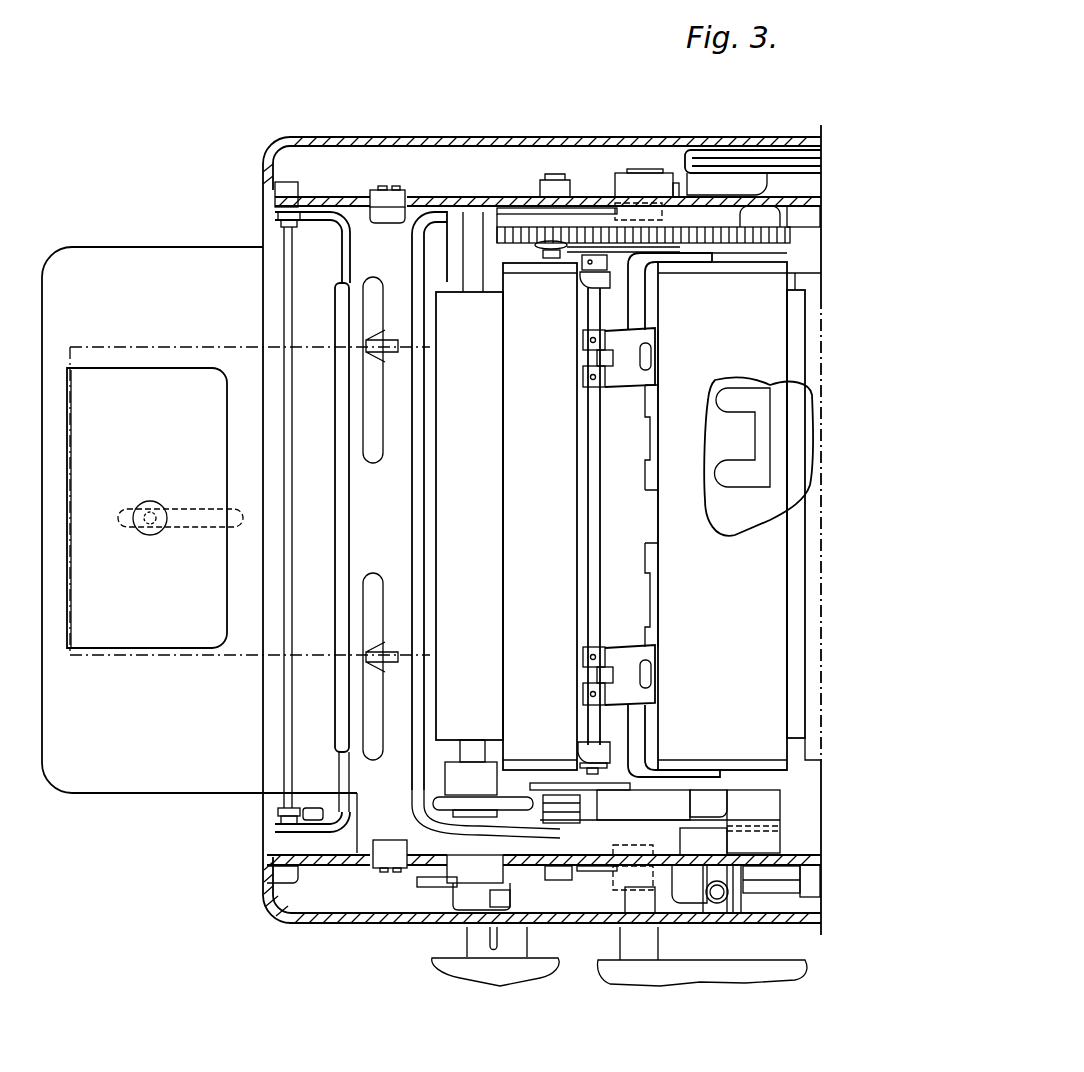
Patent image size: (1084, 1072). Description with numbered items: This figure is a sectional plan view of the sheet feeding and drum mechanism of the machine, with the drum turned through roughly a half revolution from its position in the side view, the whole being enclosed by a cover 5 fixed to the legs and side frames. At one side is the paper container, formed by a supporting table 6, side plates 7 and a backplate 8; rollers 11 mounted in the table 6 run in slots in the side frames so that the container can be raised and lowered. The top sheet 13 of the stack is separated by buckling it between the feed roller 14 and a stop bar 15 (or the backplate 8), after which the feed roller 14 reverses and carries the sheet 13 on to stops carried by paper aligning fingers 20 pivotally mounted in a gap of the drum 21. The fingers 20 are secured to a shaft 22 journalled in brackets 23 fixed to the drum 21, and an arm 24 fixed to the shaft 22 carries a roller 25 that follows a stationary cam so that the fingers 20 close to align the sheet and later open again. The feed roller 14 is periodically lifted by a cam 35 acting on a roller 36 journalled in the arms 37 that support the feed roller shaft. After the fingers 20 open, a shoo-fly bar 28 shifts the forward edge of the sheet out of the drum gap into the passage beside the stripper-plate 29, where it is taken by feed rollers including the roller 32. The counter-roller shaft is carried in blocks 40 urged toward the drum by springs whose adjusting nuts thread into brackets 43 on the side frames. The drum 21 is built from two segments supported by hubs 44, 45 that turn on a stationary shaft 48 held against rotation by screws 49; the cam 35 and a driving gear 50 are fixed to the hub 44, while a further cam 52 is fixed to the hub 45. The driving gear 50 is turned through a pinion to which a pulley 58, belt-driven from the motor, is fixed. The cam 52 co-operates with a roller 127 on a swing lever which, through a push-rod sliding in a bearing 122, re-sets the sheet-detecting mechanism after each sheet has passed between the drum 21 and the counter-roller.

The cover 5 is at (400, 924).
The supporting table 6 is at (70, 622).
The side plates 7 is at (388, 657).
The backplate 8 is at (146, 768).
The rollers 11 is at (377, 861).
The top sheet 13 is at (128, 347).
The feed roller 14 is at (469, 503).
The stop bar 15 is at (345, 466).
The paper aligning fingers 20 is at (638, 658).
The drum 21 is at (722, 516).
The shaft 22 is at (593, 443).
The brackets 23 is at (593, 752).
The arm 24 is at (573, 249).
The roller 25 is at (537, 247).
The shoo-fly bar 28 is at (633, 750).
The stripper-plate 29 is at (765, 405).
The feed roller 32 is at (800, 558).
The cam 35 is at (588, 225).
The roller 36 is at (622, 225).
The arms 37 is at (445, 213).
The blocks 40 is at (687, 898).
The brackets 43 is at (733, 905).
The hub 44 is at (737, 268).
The hub 45 is at (732, 760).
The stationary shaft 48 is at (650, 173).
The screws 49 is at (676, 188).
The driving gear 50 is at (505, 227).
The cam 52 is at (690, 823).
The pulley 58 is at (775, 152).
The bearing 122 is at (820, 898).
The roller 127 is at (537, 830).